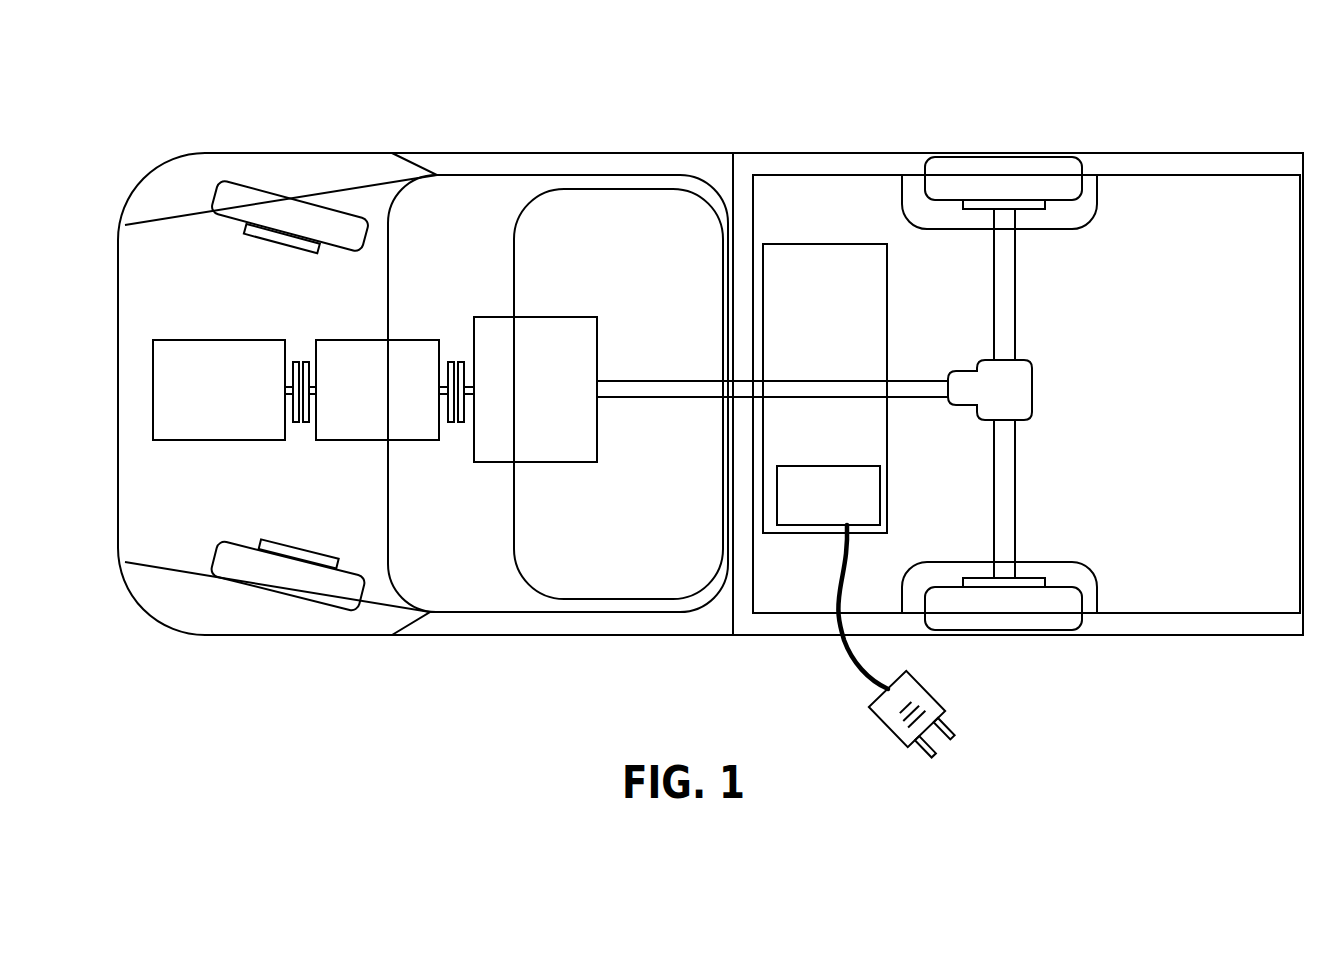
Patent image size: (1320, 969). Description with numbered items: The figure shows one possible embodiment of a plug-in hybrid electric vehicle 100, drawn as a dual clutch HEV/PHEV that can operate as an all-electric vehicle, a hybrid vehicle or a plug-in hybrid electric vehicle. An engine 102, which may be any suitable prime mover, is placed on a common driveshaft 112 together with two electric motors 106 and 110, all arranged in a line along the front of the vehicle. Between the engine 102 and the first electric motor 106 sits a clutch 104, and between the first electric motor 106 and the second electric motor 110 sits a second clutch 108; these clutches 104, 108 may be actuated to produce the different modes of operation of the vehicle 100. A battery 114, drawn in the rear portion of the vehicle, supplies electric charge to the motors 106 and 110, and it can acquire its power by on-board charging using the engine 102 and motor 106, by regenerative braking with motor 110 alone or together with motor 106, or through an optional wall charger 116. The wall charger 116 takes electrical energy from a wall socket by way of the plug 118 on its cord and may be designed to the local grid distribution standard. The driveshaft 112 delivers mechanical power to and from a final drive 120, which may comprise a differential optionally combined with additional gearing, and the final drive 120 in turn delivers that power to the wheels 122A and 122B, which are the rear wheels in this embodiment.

The vehicle 100 is at (800, 98).
The engine 102 is at (215, 341).
The clutch 104 is at (295, 360).
The electric motor 106 is at (372, 342).
The clutch 108 is at (452, 360).
The electric motor 110 is at (570, 315).
The driveshaft 112 is at (642, 380).
The battery 114 is at (818, 243).
The wall charger 116 is at (803, 465).
The plug 118 is at (885, 731).
The final drive 120 is at (1003, 382).
The wheel 122A is at (1007, 157).
The wheel 122B is at (1008, 630).